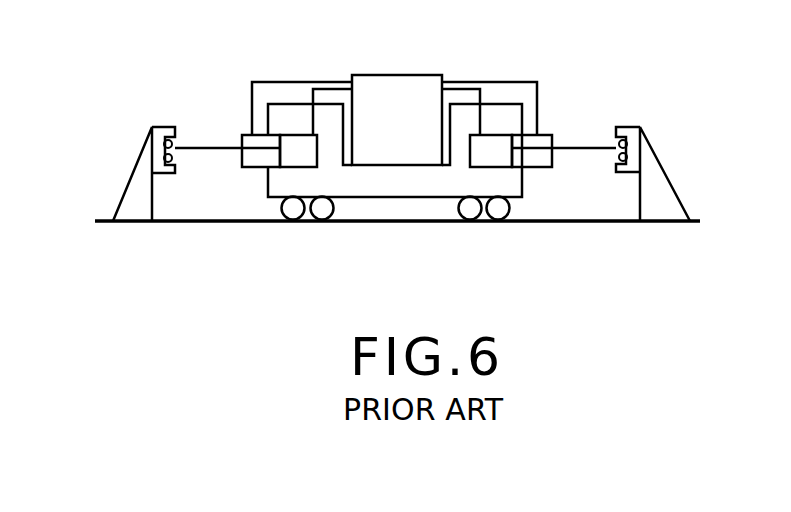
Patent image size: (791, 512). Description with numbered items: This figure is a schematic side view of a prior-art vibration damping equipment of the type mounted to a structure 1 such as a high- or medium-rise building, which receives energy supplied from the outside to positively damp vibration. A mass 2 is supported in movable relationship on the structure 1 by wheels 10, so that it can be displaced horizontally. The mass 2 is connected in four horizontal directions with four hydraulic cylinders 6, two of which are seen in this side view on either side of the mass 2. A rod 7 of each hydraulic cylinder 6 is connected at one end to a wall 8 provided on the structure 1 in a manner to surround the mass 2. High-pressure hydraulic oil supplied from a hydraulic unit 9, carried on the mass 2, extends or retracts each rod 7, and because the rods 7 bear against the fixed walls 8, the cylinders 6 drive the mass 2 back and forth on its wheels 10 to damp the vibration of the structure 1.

The structure 1 is at (103, 218).
The mass 2 is at (287, 115).
The hydraulic cylinder 6 is at (250, 157).
The rod 7 is at (213, 147).
The wall 8 is at (160, 128).
The hydraulic unit 9 is at (382, 82).
The wheel 10 is at (293, 212).